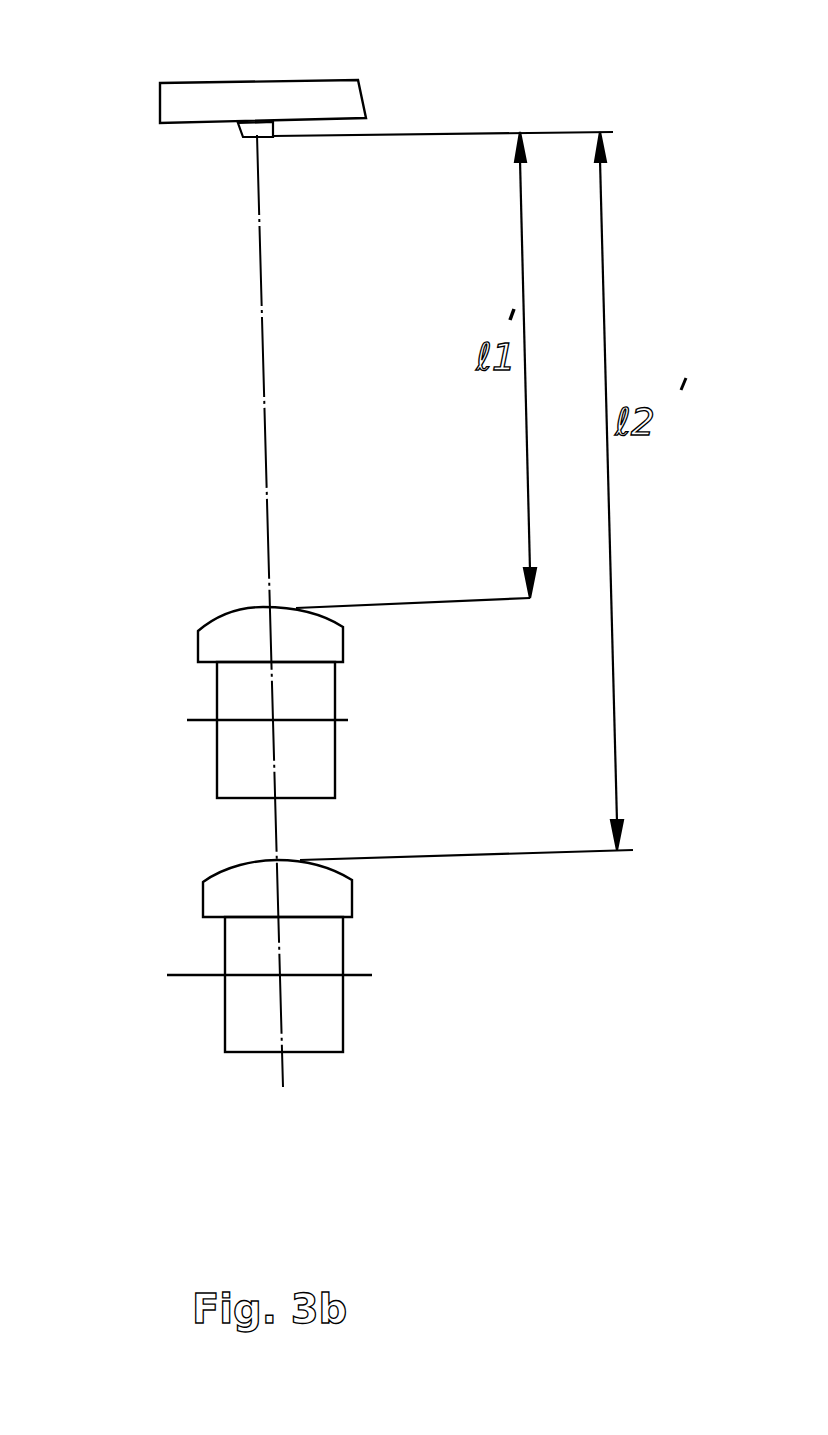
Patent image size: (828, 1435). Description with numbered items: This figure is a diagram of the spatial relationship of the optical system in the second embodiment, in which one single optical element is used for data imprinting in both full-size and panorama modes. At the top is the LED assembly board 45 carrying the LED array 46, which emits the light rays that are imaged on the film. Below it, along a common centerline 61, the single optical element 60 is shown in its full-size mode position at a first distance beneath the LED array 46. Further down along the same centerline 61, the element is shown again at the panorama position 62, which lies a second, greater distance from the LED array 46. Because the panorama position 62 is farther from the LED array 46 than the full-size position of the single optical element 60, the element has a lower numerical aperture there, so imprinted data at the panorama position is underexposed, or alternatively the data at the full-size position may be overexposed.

The LED assembly board 45 is at (307, 92).
The LED array 46 is at (247, 128).
The single optical element 60 is at (230, 682).
The optical axis 61 is at (258, 347).
The panorama position 62 is at (233, 945).